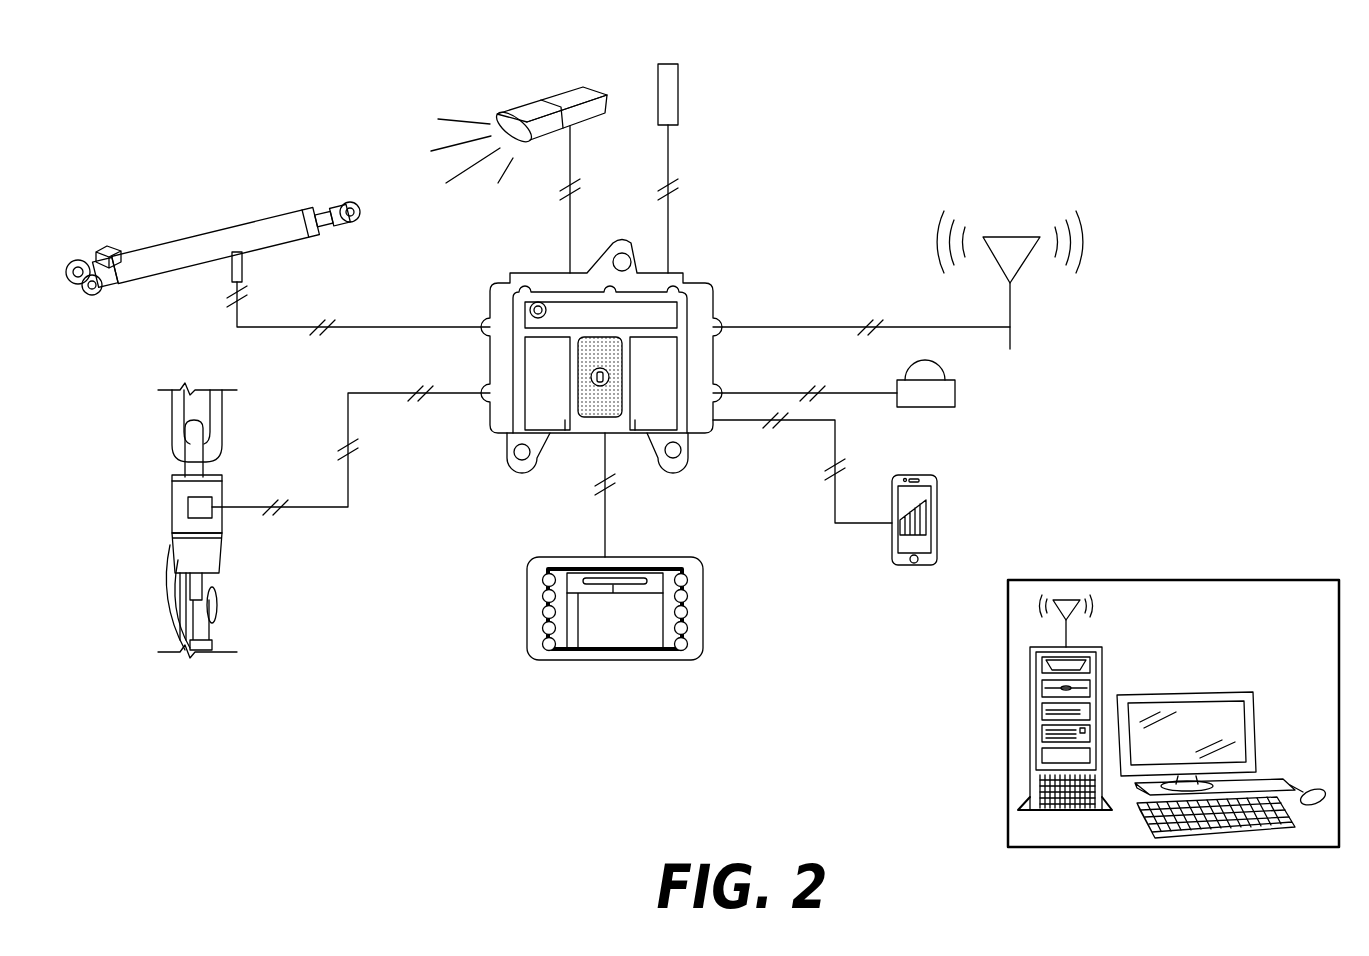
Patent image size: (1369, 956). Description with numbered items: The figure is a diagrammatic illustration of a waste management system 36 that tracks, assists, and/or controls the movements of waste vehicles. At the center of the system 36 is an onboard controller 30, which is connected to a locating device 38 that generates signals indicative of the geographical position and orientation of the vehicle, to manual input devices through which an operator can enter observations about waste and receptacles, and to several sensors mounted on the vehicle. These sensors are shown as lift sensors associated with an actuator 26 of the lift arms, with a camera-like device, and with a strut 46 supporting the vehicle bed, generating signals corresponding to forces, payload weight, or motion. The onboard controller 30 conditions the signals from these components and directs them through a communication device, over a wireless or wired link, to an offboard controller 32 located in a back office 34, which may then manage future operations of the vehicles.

The actuator 26 is at (165, 244).
The onboard controller 30 is at (713, 282).
The offboard controller 32 is at (1102, 680).
The back office 34 is at (1006, 792).
The waste management system 36 is at (971, 89).
The locating device 38 is at (955, 395).
The strut 46 is at (222, 540).